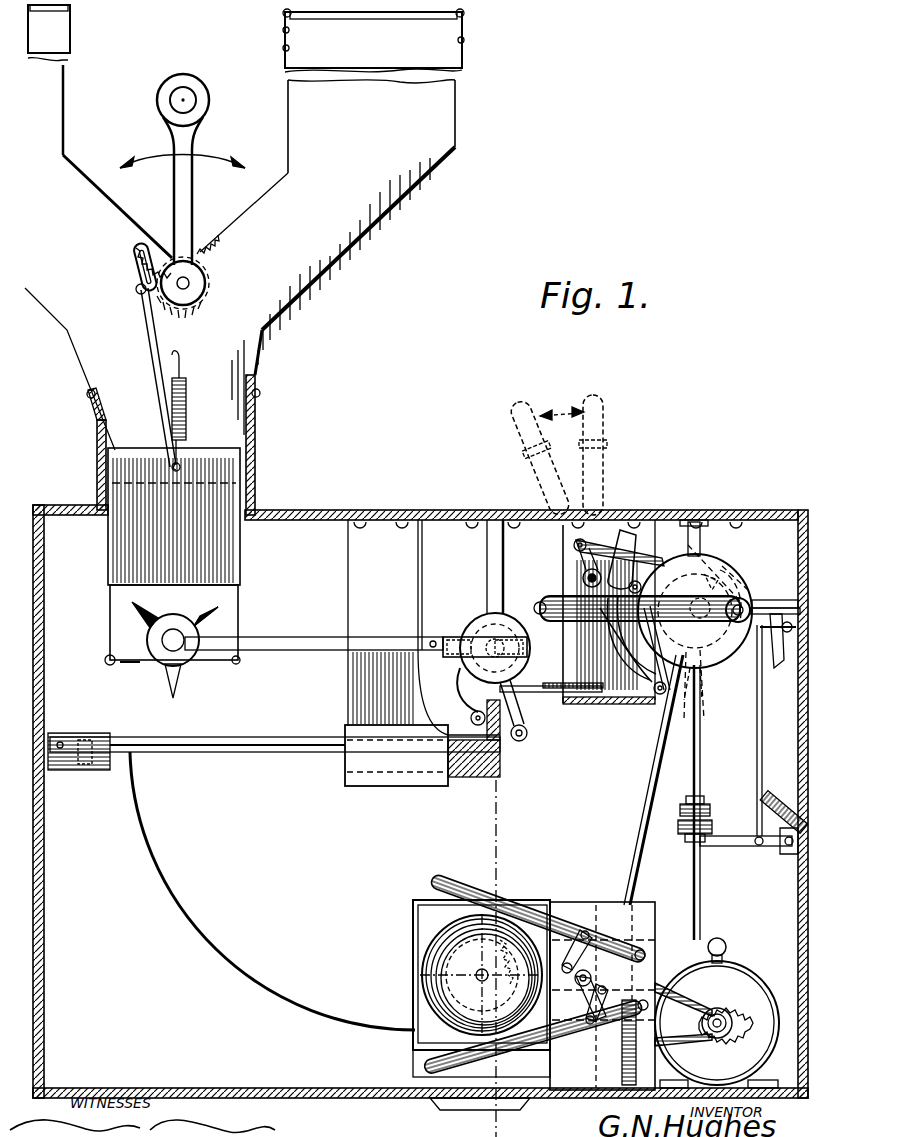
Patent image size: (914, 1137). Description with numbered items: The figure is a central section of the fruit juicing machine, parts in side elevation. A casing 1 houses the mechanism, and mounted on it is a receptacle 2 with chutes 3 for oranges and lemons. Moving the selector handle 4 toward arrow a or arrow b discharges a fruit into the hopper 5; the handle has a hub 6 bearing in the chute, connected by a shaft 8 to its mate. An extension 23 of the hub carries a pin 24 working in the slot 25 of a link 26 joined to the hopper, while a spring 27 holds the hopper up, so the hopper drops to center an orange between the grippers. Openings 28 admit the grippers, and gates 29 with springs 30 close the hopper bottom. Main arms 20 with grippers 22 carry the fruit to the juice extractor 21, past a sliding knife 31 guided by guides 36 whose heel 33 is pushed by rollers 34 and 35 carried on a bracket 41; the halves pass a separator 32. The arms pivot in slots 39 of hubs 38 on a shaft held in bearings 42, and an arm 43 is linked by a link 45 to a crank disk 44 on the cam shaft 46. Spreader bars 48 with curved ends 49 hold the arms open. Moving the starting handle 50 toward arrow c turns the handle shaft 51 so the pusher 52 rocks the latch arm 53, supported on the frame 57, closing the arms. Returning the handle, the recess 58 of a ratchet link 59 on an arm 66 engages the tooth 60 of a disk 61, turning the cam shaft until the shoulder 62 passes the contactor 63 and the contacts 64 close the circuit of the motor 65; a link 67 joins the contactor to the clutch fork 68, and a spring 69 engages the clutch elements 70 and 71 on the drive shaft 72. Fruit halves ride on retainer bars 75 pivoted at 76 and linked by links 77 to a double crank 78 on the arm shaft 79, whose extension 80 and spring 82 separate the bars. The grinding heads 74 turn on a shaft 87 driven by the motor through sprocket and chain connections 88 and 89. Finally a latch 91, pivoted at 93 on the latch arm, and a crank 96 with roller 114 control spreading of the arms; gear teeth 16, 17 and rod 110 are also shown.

The casing 1 is at (318, 510).
The receptacle 2 is at (204, 169).
The chute 3 is at (335, 252).
The selector handle 4 is at (176, 184).
The hopper 5 is at (110, 558).
The hub 6 is at (205, 300).
The shaft 8 is at (190, 283).
The gear teeth 16 is at (152, 230).
The gear teeth 17 is at (203, 236).
The main arms 20 is at (310, 650).
The juice extractor 21 is at (410, 884).
The gripper 22 is at (162, 658).
The extension 23 is at (141, 290).
The pin 24 is at (138, 282).
The slot 25 is at (134, 262).
The link 26 is at (140, 322).
The spring 27 is at (188, 396).
The openings 28 is at (112, 588).
The gates 29 is at (122, 664).
The springs 30 is at (108, 658).
The knife 31 is at (143, 756).
The separator 32 is at (160, 868).
The heel 33 is at (486, 772).
The roller 34 is at (471, 718).
The roller 35 is at (526, 740).
The guides 36 is at (70, 766).
The hubs 38 is at (470, 618).
The slots 39 is at (466, 638).
The bracket 41 is at (540, 722).
The bearings 42 is at (485, 562).
The arm 43 is at (520, 612).
The crank disk 44 is at (694, 560).
The link 45 is at (566, 622).
The cam shaft 46 is at (700, 680).
The spreader bars 48 is at (548, 694).
The curved ends 49 is at (456, 672).
The starting handle 50 is at (596, 398).
The handle shaft 51 is at (584, 578).
The pusher 52 is at (610, 630).
The latch arm 53 is at (628, 540).
The frame 57 is at (616, 690).
The recess 58 is at (716, 560).
The ratchet link 59 is at (720, 590).
The tooth 60 is at (718, 586).
The disk 61 is at (668, 712).
The shoulder 62 is at (746, 600).
The contactor 63 is at (788, 630).
The contacts 64 is at (776, 650).
The motor 65 is at (742, 974).
The arm 66 is at (574, 546).
The link 67 is at (756, 716).
The clutch fork 68 is at (734, 846).
The spring 69 is at (776, 806).
The clutch element 70 is at (678, 826).
The clutch element 71 is at (684, 802).
The drive shaft 72 is at (692, 872).
The grinding heads 74 is at (416, 1040).
The retainer bars 75 is at (452, 880).
The pivot 76 is at (656, 950).
The links 77 is at (566, 928).
The double crank 78 is at (584, 1020).
The arm shaft 79 is at (592, 1026).
The extension 80 is at (596, 904).
The spring 82 is at (622, 1074).
The shaft 87 is at (412, 974).
The sprocket and chain connection 88 is at (512, 930).
The sprocket and chain connection 89 is at (706, 980).
The latch 91 is at (660, 696).
The pivot 93 is at (646, 690).
The crank 96 is at (640, 556).
The rod 110 is at (706, 680).
The roller 114 is at (664, 556).
The arrow a is at (182, 160).
The arrow b is at (219, 164).
The arrow c is at (562, 416).